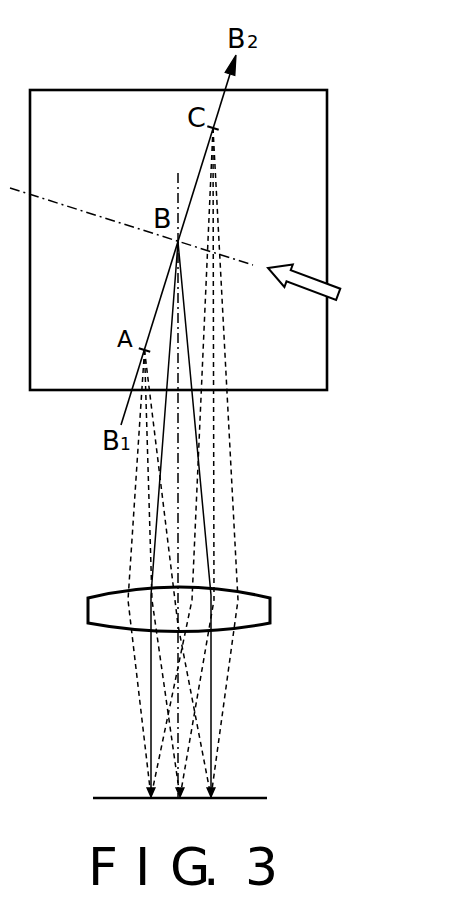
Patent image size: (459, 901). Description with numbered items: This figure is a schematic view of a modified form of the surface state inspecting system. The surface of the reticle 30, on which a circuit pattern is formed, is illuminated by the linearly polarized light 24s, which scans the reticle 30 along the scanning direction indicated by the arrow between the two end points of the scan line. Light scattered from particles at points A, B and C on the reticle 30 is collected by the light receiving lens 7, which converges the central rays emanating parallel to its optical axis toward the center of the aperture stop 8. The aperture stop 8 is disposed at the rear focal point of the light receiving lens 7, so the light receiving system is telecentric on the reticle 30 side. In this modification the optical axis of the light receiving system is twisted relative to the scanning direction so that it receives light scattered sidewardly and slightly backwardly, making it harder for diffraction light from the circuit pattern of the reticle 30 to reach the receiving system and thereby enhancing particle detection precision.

The reticle 30 is at (310, 127).
The linearly polarized light 24s is at (332, 282).
The light receiving lens 7 is at (263, 610).
The aperture stop 8 is at (255, 798).